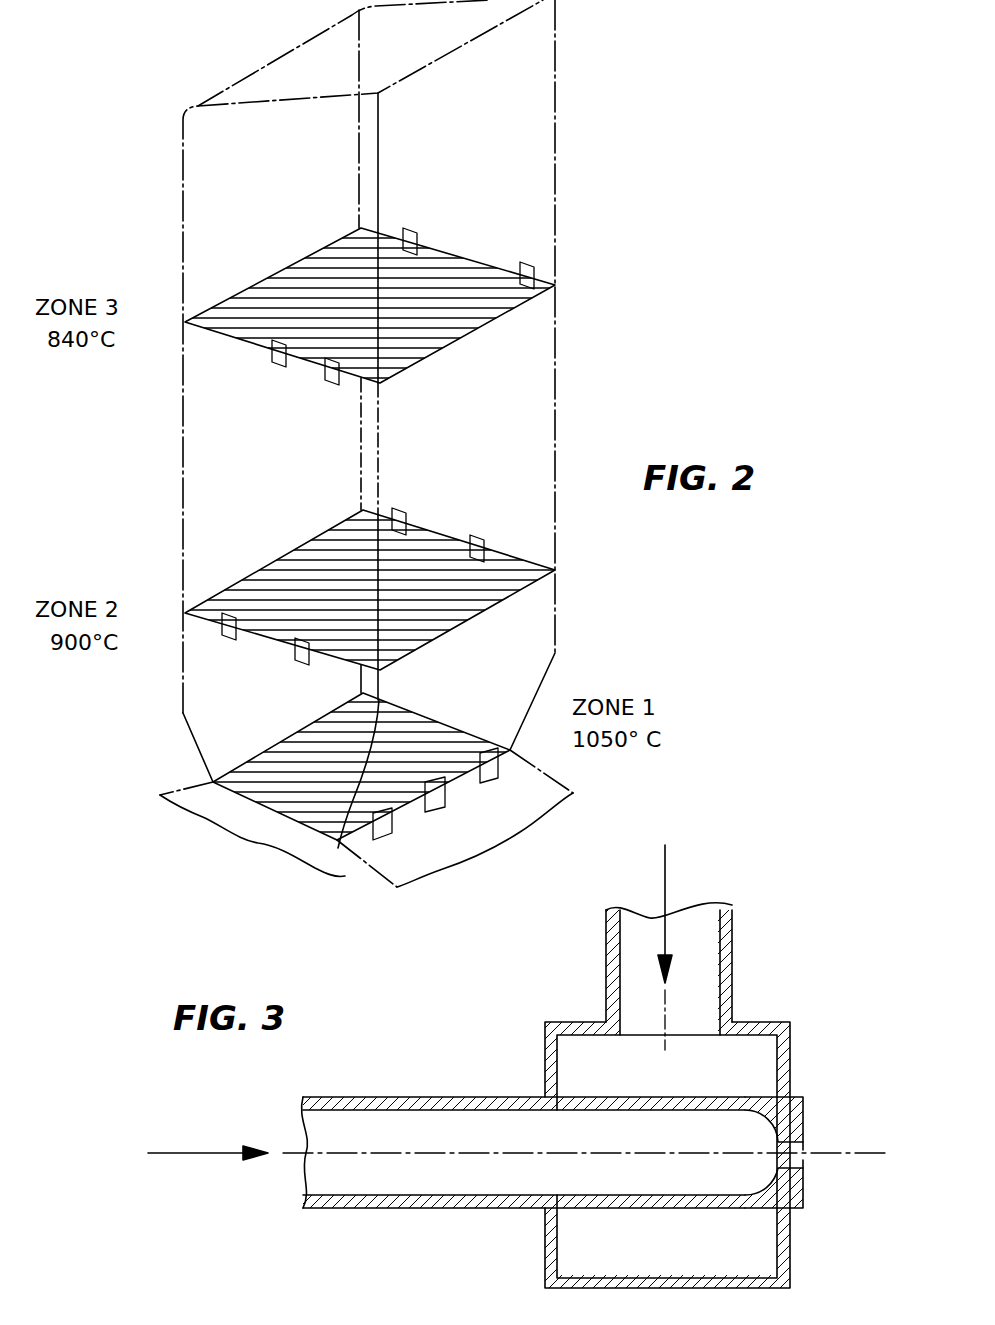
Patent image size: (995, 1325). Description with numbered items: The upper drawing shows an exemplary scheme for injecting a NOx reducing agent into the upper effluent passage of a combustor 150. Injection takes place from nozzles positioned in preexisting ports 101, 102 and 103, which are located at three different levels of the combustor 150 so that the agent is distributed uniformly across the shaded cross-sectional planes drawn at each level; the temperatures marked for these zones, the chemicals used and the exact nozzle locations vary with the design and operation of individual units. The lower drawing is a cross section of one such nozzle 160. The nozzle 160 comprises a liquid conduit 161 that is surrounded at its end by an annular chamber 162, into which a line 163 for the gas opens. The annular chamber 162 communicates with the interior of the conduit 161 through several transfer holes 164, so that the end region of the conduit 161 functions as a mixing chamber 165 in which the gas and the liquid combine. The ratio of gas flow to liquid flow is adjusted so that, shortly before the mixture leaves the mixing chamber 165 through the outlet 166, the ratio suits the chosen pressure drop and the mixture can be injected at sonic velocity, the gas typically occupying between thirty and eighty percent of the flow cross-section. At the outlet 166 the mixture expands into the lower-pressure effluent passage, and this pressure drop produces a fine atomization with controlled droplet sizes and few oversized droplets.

In FIG. 2, the preexisting port 101 is at (392, 837).
In FIG. 2, the preexisting port 102 is at (400, 508).
In FIG. 2, the preexisting port 103 is at (410, 230).
In FIG. 2, the combustor 150 is at (555, 168).
In FIG. 3, the nozzle 160 is at (522, 1066).
In FIG. 3, the liquid conduit 161 is at (393, 1208).
In FIG. 3, the annular chamber 162 is at (605, 1245).
In FIG. 3, the line for the gas 163 is at (733, 953).
In FIG. 3, the transfer holes 164 is at (720, 1105).
In FIG. 3, the mixing chamber 165 is at (675, 1142).
In FIG. 3, the outlet 166 is at (806, 1157).